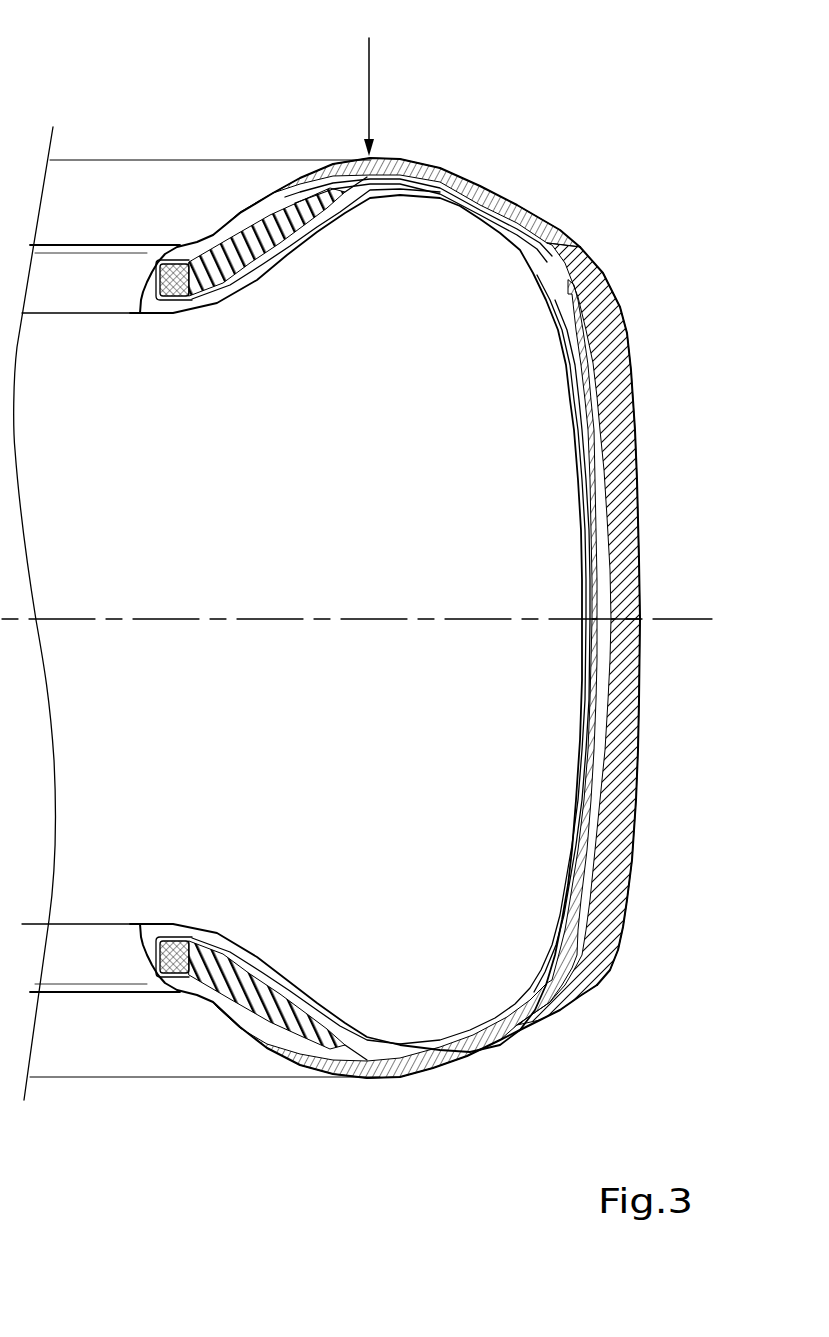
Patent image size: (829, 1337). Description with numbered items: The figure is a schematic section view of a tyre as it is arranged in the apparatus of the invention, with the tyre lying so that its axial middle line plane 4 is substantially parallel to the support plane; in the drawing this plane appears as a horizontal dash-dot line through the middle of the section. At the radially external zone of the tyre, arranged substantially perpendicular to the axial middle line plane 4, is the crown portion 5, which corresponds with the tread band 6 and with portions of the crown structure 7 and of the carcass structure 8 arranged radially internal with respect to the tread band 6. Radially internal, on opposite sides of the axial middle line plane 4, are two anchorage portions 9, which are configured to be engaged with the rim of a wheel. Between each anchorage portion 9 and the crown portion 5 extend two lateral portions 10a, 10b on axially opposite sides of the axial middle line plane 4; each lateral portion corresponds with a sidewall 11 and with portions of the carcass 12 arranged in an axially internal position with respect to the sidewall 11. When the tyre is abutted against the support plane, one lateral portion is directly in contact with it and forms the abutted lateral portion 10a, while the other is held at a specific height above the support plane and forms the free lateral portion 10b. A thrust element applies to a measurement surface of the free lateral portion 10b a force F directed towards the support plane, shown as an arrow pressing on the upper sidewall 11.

The axial middle line plane 4 is at (679, 621).
The crown portion 5 is at (636, 398).
The tread band 6 is at (627, 458).
The crown structure 7 is at (600, 793).
The carcass structure 8 is at (580, 833).
The anchorage portions 9 is at (180, 237).
The abutted lateral portion 10a is at (422, 1084).
The free lateral portion 10b is at (392, 140).
The sidewall 11 is at (410, 162).
The carcass 12 is at (437, 187).
The force F is at (368, 63).